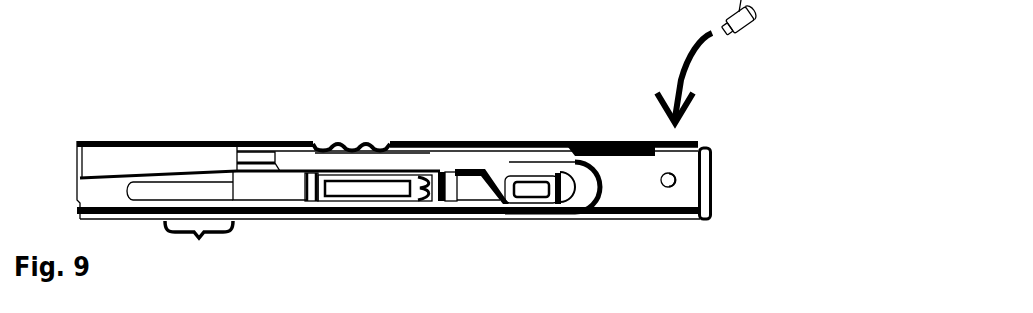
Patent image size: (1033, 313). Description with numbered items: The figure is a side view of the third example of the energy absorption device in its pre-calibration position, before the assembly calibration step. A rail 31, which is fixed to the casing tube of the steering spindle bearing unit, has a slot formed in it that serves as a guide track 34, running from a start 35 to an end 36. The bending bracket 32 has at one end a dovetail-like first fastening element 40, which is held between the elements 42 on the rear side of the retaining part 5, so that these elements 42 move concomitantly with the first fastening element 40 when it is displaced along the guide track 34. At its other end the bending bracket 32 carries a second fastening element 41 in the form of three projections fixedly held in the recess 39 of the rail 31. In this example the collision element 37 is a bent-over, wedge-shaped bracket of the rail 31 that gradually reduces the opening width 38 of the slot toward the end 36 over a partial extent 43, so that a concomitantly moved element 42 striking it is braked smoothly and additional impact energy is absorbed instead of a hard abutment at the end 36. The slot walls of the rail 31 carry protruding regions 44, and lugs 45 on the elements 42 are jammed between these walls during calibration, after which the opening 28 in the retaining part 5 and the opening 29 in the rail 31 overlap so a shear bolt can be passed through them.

The retaining part 5 is at (410, 188).
The opening 28 is at (676, 175).
The opening 29 is at (668, 190).
The rail 31 is at (610, 198).
The bending bracket 32 is at (422, 160).
The guide track 34 is at (298, 190).
The start of the guide track 35 is at (563, 182).
The end of the guide track 36 is at (132, 186).
The collision element 37 is at (165, 160).
The opening width 38 is at (232, 185).
The recess 39 is at (388, 127).
The first fastening element 40 is at (505, 197).
The second fastening element 41 is at (353, 143).
The elements 42 is at (478, 168).
The partial extent 43 is at (199, 250).
The protruding regions 44 is at (447, 172).
The lugs 45 is at (455, 190).